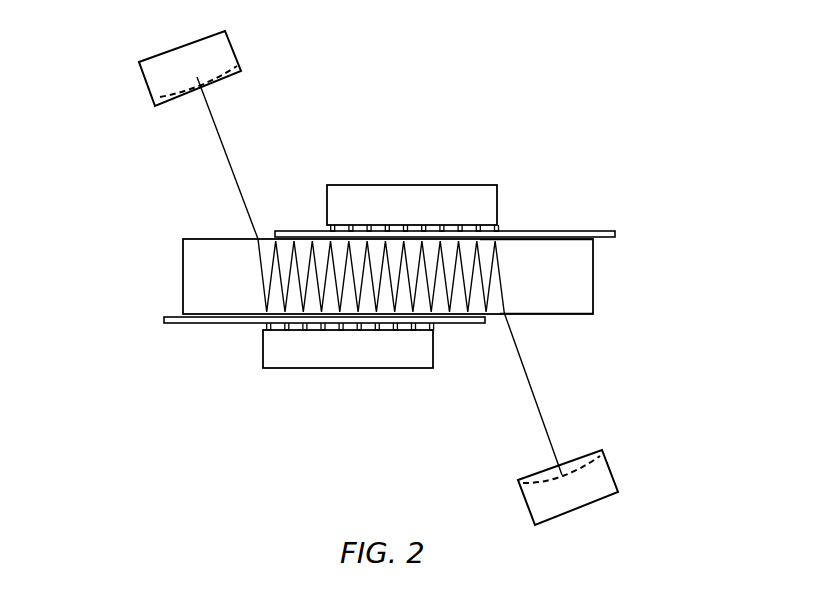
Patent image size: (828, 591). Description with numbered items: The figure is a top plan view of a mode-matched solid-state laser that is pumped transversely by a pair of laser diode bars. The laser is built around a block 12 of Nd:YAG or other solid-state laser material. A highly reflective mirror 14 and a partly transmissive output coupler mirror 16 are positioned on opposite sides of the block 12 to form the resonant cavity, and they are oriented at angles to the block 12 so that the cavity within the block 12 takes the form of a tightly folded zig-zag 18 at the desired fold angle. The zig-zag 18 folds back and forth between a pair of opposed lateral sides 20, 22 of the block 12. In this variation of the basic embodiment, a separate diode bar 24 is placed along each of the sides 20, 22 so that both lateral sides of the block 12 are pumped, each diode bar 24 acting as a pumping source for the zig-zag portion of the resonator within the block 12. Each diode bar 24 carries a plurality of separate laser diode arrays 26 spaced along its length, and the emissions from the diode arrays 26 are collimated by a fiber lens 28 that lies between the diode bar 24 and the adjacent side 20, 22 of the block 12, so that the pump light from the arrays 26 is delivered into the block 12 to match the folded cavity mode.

The block 12 is at (183, 283).
The highly reflective mirror 14 is at (616, 473).
The output coupler mirror 16 is at (143, 80).
The zig-zag 18 is at (261, 290).
The lateral side 20 is at (575, 241).
The lateral side 22 is at (590, 312).
The diode bar 24 is at (327, 197).
The laser diode arrays 26 is at (350, 225).
The fiber lens 28 is at (590, 231).